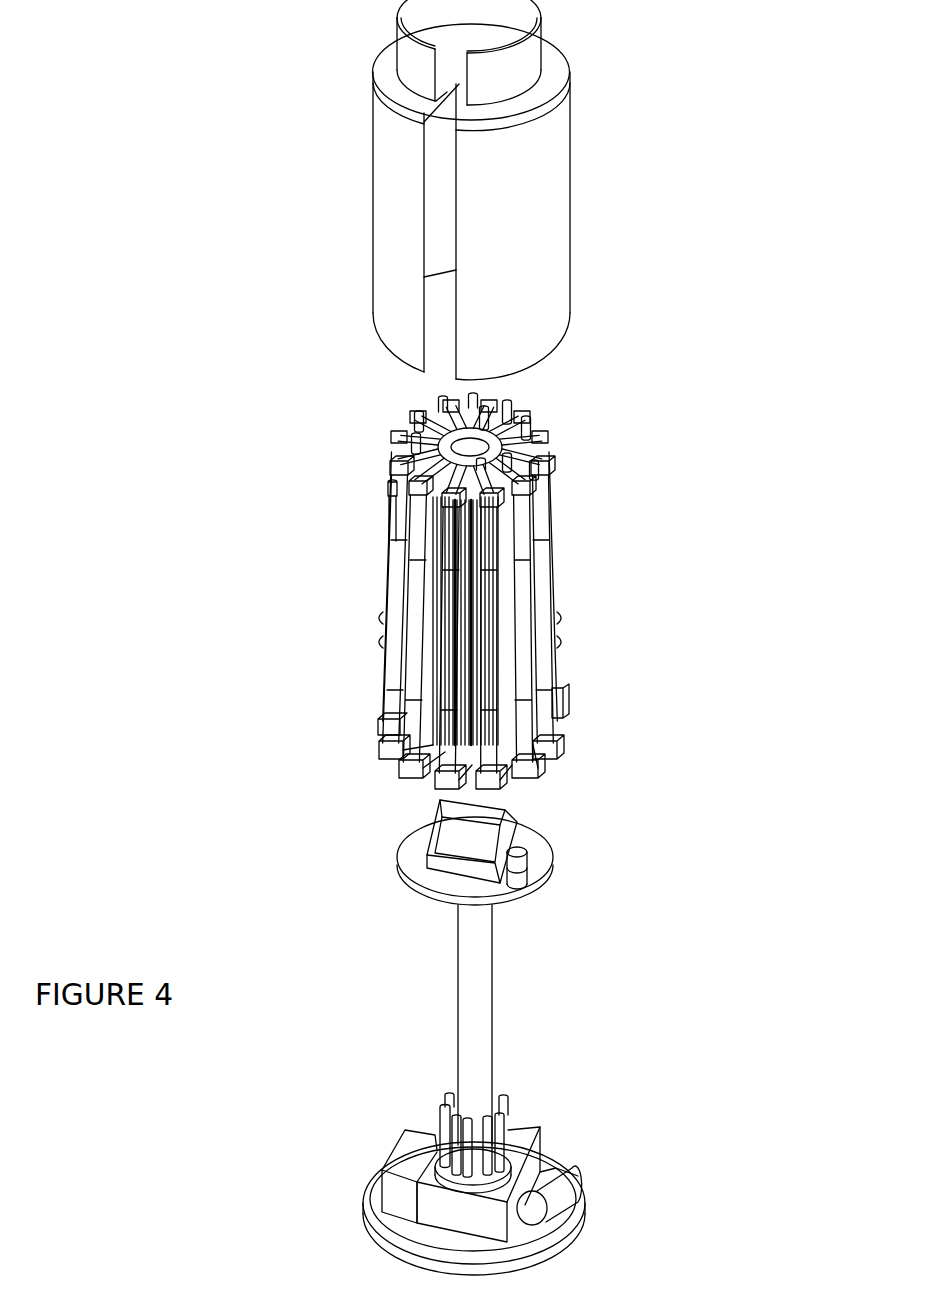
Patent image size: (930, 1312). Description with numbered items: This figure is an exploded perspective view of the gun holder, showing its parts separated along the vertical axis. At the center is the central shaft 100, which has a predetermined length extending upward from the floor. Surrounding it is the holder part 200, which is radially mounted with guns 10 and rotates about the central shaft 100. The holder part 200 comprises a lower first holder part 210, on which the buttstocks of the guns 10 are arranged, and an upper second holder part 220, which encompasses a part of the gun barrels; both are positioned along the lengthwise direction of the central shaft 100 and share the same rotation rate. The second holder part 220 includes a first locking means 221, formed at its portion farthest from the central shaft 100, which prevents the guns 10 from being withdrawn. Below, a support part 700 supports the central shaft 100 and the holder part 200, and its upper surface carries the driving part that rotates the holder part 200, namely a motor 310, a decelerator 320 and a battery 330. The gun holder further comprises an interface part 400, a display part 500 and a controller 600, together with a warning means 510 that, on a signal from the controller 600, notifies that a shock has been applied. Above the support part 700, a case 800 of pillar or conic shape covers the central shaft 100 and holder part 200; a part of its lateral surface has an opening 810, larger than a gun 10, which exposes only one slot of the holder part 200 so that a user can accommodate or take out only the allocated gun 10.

The case 800 is at (422, 190).
The opening 810 is at (442, 290).
The holder part 200 is at (411, 591).
The second holder part 220 is at (400, 460).
The first locking means 221 is at (405, 500).
The gun 10 is at (540, 577).
The first holder part 210 is at (392, 760).
The interface part 400 is at (548, 827).
The display part 500 is at (475, 852).
The controller 600 is at (508, 810).
The warning means 510 is at (527, 857).
The central shaft 100 is at (484, 1032).
The support part 700 is at (480, 1179).
The motor 310 is at (562, 1174).
The decelerator 320 is at (560, 1172).
The battery 330 is at (407, 1133).